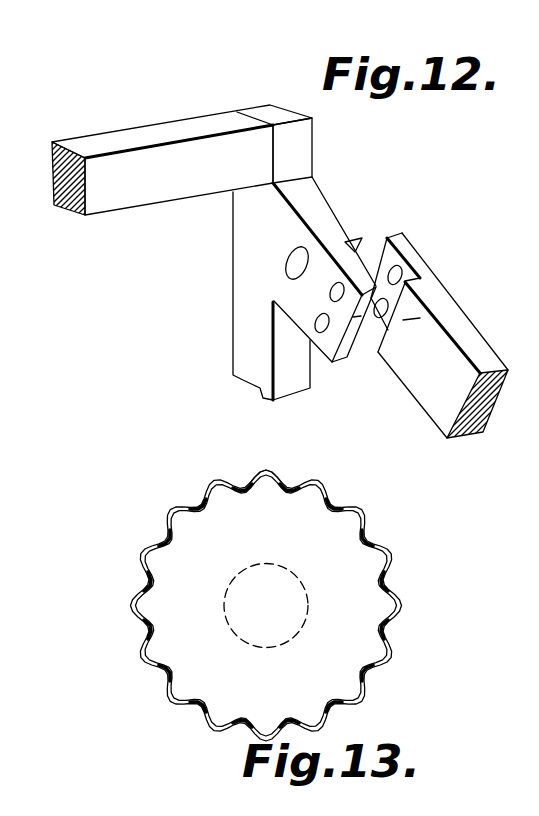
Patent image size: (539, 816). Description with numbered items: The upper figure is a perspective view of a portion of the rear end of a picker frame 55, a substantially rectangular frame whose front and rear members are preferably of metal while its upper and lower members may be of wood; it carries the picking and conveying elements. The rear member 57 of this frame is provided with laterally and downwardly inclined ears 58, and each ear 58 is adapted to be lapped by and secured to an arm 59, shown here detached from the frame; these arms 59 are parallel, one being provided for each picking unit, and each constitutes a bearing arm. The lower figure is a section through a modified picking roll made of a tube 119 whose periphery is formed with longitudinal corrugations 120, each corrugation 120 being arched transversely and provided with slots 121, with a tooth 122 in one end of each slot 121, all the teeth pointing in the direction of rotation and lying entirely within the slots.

In FIG. 12, the picker frame 55 is at (175, 193).
In FIG. 12, the rear member 57 is at (300, 152).
In FIG. 12, the ear 58 is at (335, 208).
In FIG. 12, the arm 59 is at (450, 308).
In FIG. 13, the tube 119 is at (333, 508).
In FIG. 13, the longitudinal corrugation 120 is at (287, 485).
In FIG. 13, the slot 121 is at (228, 456).
In FIG. 13, the tooth 122 is at (330, 449).